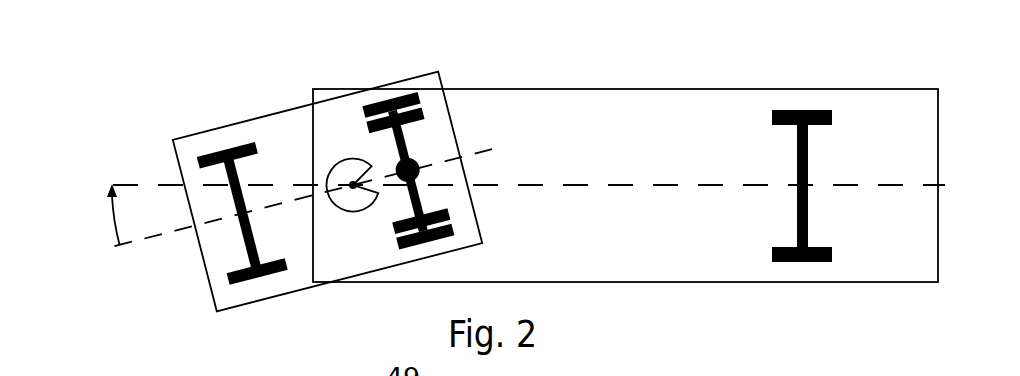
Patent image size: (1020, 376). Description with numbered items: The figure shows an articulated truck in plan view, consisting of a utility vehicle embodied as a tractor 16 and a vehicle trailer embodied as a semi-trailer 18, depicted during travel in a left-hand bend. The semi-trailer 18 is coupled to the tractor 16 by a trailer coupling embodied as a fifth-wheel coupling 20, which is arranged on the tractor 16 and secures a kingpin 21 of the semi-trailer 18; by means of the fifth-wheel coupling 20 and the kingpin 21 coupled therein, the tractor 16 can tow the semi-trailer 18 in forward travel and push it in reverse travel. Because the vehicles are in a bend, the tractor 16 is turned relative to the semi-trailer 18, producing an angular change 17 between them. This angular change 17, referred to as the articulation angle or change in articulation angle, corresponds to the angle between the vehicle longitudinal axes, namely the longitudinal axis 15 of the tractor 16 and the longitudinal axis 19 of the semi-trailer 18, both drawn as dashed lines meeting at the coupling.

The longitudinal axis of the tractor 15 is at (472, 153).
The tractor 16 is at (208, 288).
The angular change 17 is at (112, 245).
The semi-trailer 18 is at (653, 89).
The longitudinal axis of the semi-trailer 19 is at (552, 183).
The fifth-wheel coupling 20 is at (357, 196).
The kingpin 21 is at (352, 210).